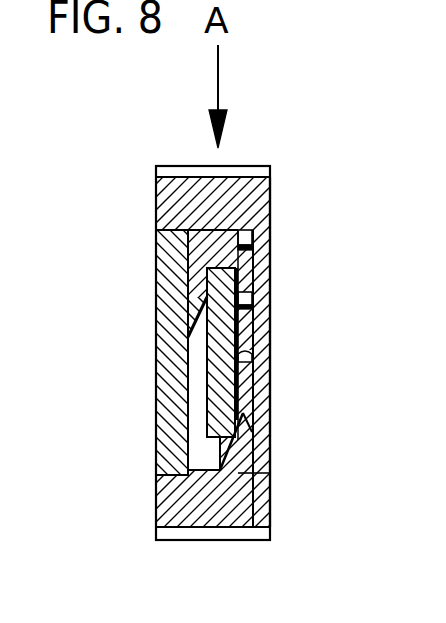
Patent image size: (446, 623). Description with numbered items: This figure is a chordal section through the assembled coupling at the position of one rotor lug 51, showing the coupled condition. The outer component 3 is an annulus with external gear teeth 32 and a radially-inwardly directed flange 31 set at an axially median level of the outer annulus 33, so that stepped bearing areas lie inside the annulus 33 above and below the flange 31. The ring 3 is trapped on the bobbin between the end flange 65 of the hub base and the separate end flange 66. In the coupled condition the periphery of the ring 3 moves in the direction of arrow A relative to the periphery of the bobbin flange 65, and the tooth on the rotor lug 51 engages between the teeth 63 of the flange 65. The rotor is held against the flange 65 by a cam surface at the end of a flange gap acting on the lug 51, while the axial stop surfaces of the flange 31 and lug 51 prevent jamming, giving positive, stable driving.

The outer component 3 is at (146, 198).
The flange 31 is at (207, 257).
The external gear teeth 32 is at (183, 166).
The outer annulus 33 is at (223, 193).
The rotor lug 51 is at (223, 362).
The teeth 63 is at (235, 445).
The end flange 65 is at (272, 445).
The end flange 66 is at (170, 352).